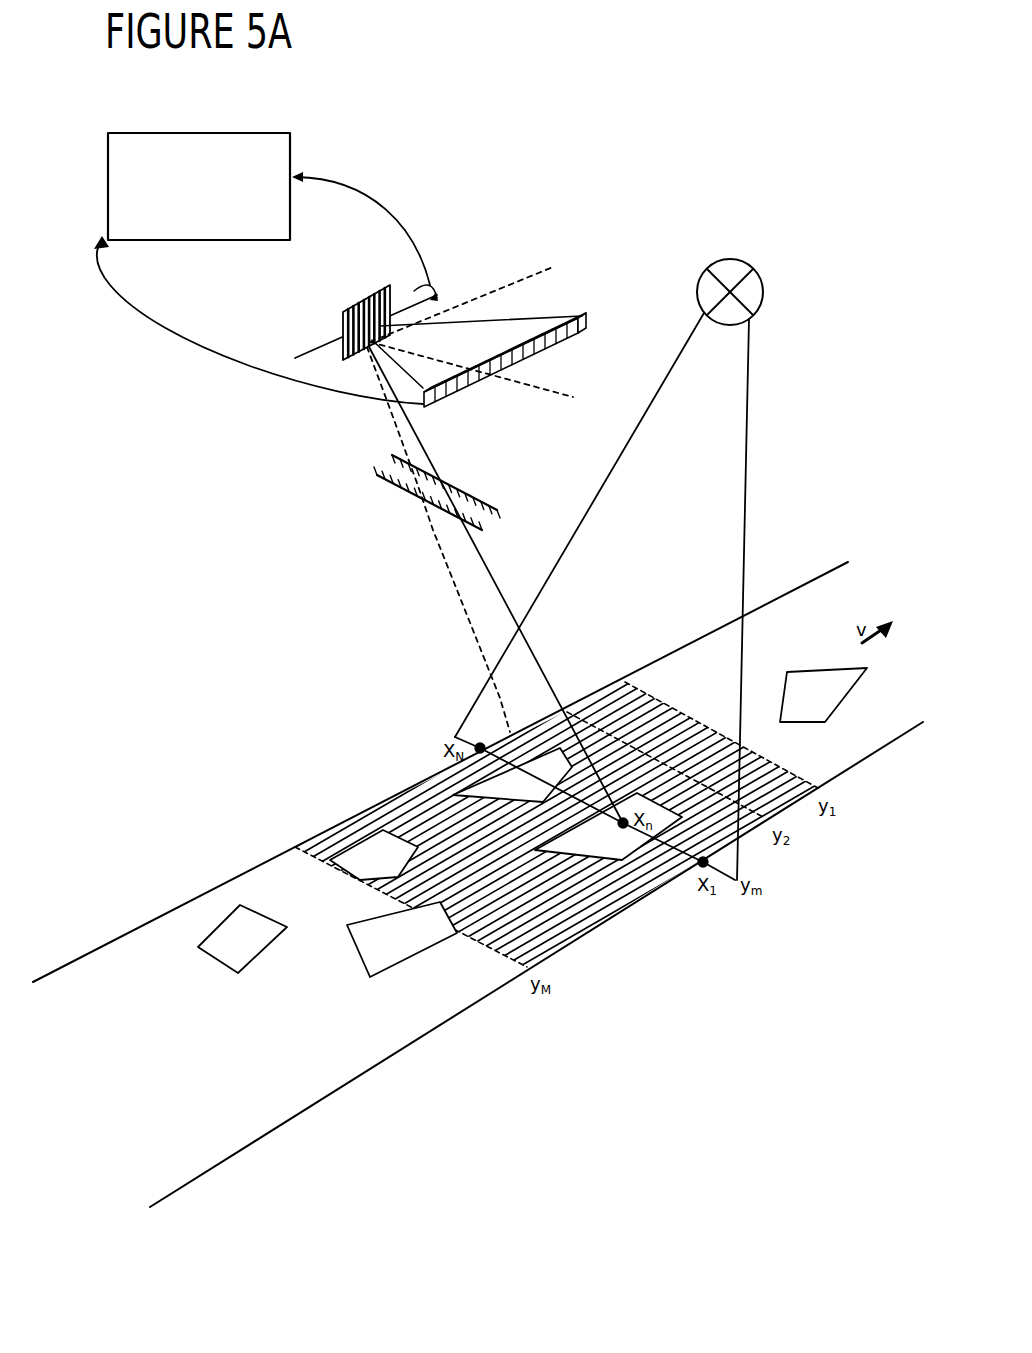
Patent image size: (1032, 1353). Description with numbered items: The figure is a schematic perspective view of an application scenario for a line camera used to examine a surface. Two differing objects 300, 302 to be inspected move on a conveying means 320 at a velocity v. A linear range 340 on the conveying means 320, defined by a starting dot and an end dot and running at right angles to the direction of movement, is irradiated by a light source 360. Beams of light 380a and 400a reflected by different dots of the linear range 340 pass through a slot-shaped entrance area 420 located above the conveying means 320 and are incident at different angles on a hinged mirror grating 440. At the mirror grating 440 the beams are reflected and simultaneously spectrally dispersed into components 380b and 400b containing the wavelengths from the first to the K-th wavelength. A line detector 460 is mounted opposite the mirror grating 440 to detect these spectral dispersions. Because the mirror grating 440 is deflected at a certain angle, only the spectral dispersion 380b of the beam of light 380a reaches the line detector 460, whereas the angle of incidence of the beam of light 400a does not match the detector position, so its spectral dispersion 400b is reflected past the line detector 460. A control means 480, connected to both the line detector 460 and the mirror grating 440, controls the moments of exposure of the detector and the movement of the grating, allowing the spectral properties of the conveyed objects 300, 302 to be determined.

The object to be inspected 300 is at (532, 820).
The object to be inspected 302 is at (514, 885).
The conveying means 320 is at (602, 927).
The linear range 340 is at (712, 868).
The light source 360 is at (763, 288).
The beam of light 380a is at (541, 671).
The spectral dispersion 380b is at (462, 367).
The beam of light 400a is at (460, 593).
The spectral dispersion 400b is at (575, 397).
The slot-shaped entrance area 420 is at (392, 483).
The hinged mirror grating 440 is at (343, 327).
The line detector 460 is at (477, 390).
The control means 480 is at (292, 156).